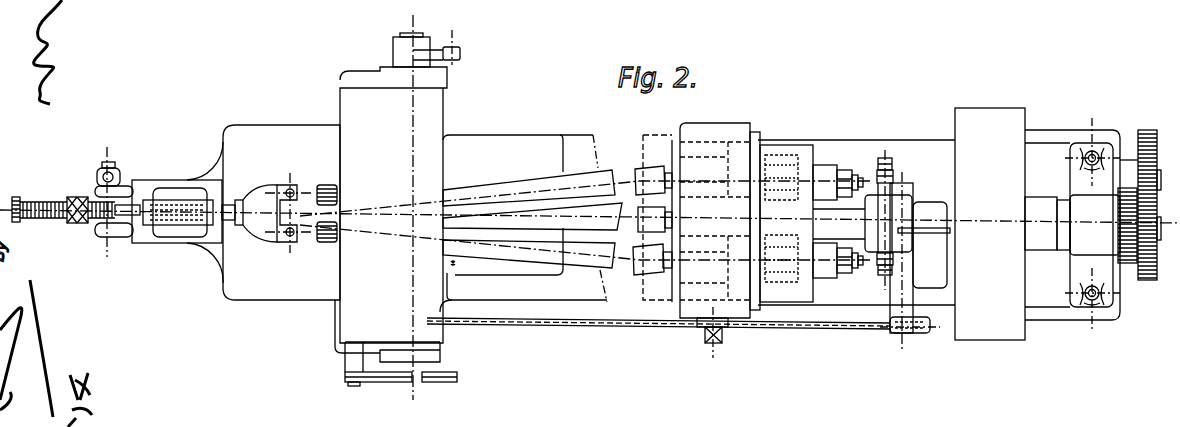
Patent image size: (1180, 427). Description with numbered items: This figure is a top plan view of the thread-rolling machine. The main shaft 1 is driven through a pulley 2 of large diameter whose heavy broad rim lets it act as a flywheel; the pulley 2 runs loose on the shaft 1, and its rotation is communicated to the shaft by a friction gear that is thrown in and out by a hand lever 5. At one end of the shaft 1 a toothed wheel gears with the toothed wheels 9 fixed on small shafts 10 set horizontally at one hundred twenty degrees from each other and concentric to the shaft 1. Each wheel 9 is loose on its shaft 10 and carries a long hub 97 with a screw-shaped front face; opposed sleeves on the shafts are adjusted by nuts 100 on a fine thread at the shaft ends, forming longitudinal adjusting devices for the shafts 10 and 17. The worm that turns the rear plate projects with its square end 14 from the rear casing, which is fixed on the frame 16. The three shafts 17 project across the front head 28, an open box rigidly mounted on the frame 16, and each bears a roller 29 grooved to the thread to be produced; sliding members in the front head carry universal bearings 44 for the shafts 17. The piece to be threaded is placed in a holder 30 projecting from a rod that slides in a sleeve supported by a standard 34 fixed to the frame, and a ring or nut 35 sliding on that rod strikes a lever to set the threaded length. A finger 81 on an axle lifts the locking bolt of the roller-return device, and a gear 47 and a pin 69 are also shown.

The main shaft 1 is at (907, 250).
The pulley 2 is at (990, 224).
The hand lever 5 is at (858, 222).
The toothed wheel 9 is at (786, 223).
The small shaft 10 is at (696, 225).
The square end 14 is at (627, 324).
The frame 16 is at (523, 223).
The shaft 17 is at (585, 219).
The front head 28 is at (396, 226).
The roller 29 is at (323, 187).
The holder 30 is at (251, 202).
The standard 34 is at (163, 200).
The ring or nut 35 is at (73, 196).
The universal bearing 44 is at (709, 335).
The gear 47 is at (1166, 209).
The pin 69 is at (460, 53).
The finger 81 is at (422, 36).
The hub 97 is at (838, 221).
The nut 100 is at (852, 169).